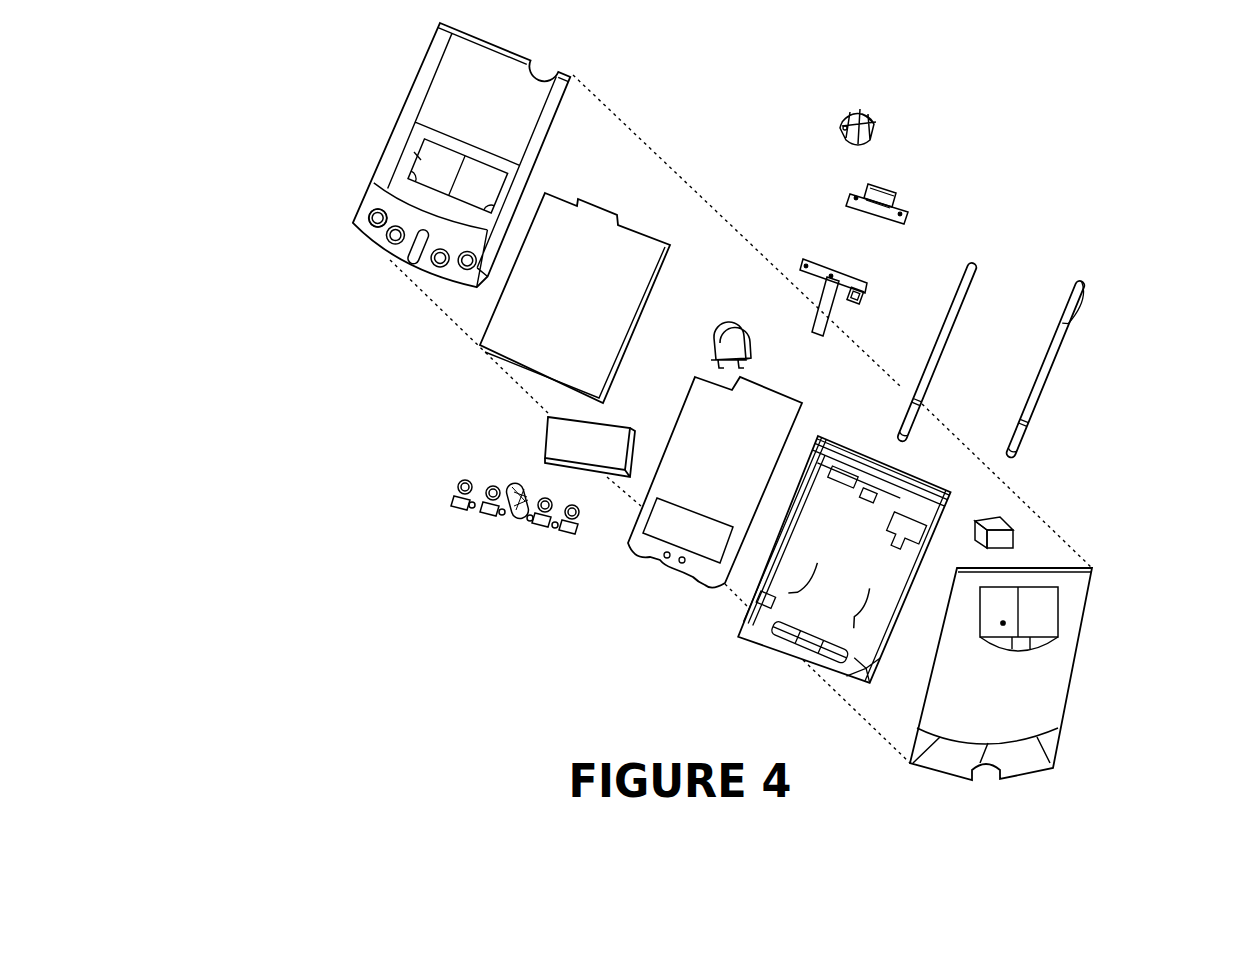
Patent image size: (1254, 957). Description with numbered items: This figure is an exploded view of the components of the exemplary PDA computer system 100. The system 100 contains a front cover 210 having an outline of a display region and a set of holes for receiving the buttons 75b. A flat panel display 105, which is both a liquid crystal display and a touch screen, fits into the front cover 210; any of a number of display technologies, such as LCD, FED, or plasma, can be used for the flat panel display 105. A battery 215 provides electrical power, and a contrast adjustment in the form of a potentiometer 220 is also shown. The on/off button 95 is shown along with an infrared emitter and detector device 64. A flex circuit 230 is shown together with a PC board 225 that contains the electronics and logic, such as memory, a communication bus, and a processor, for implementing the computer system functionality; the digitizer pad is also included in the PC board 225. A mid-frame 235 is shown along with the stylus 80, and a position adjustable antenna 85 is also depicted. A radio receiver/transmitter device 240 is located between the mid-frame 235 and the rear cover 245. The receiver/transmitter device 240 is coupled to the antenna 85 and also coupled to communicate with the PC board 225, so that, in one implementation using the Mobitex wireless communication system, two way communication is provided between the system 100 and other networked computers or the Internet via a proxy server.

The PDA computer system 100 is at (198, 47).
The front cover 210 is at (458, 157).
The flat panel display 105 is at (568, 345).
The contrast adjustment (potentiometer) 220 is at (727, 326).
The battery 215 is at (562, 443).
The buttons 75b is at (474, 510).
The PC board 225 is at (710, 494).
The mid-frame 235 is at (841, 569).
The rear cover 245 is at (1019, 724).
The on/off button 95 is at (874, 118).
The infrared emitter and detector device 64 is at (912, 206).
The flex circuit 230 is at (846, 276).
The antenna 85 is at (975, 292).
The stylus 80 is at (1086, 305).
The radio receiver/transmitter device 240 is at (988, 523).